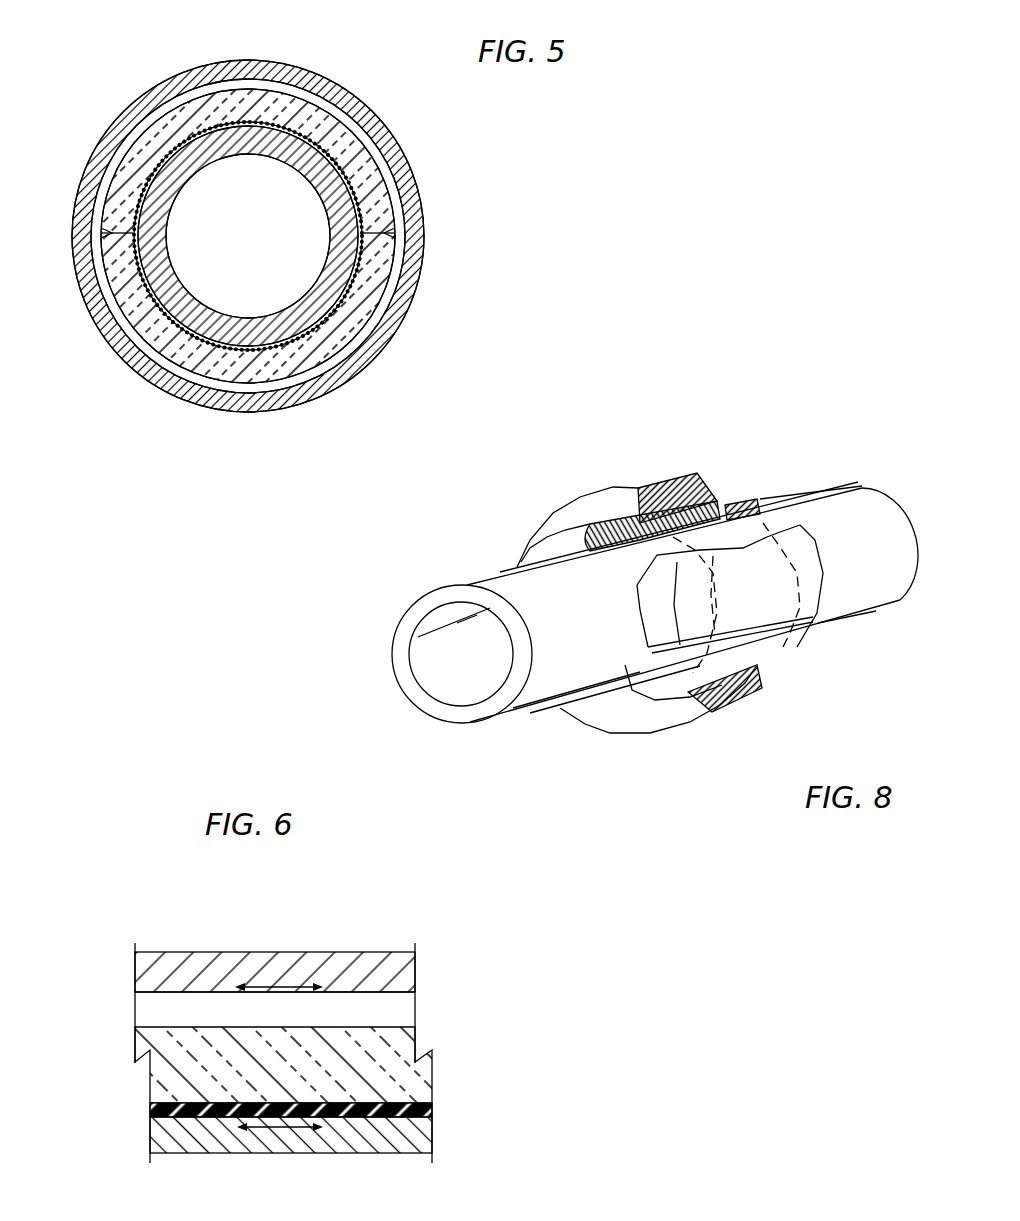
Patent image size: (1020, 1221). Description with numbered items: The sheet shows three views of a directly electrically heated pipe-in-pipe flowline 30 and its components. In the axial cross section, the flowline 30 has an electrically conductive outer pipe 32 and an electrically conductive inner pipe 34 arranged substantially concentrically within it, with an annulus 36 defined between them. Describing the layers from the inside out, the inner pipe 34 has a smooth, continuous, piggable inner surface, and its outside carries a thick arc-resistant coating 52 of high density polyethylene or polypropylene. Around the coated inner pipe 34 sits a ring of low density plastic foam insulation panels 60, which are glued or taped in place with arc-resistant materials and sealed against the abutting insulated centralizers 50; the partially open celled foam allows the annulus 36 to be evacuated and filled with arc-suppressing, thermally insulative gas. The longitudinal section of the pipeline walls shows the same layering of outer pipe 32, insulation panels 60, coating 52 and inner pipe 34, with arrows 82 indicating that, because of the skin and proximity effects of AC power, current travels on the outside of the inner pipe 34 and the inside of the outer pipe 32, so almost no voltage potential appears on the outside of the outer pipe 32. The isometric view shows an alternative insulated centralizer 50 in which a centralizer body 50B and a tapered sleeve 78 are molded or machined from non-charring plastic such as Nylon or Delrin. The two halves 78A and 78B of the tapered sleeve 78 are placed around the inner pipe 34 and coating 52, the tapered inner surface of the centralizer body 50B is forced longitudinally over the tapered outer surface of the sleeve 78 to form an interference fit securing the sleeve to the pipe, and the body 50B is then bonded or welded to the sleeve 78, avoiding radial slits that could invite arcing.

In FIG. 5, the pipe-in-pipe flowline 30 is at (91, 58).
In FIG. 5, the outer pipe 32 is at (410, 180).
In FIG. 6, the outer pipe 32 is at (358, 952).
In FIG. 5, the inner pipe 34 is at (292, 305).
In FIG. 6, the inner pipe 34 is at (261, 1156).
In FIG. 8, the inner pipe 34 is at (437, 600).
In FIG. 5, the annulus 36 is at (150, 350).
In FIG. 5, the coating 52 is at (130, 245).
In FIG. 6, the coating 52 is at (347, 1120).
In FIG. 8, the coating 52 is at (560, 702).
In FIG. 5, the insulated panels 60 is at (330, 112).
In FIG. 6, the insulated panels 60 is at (187, 1027).
In FIG. 6, the arrows 82 is at (279, 1125).
In FIG. 8, the insulated centralizer 50 is at (741, 420).
In FIG. 8, the centralizer body 50B is at (577, 500).
In FIG. 8, the tapered sleeve 78 is at (613, 702).
In FIG. 8, the first half of tapered sleeve 78A is at (738, 503).
In FIG. 8, the second half of tapered sleeve 78B is at (790, 657).